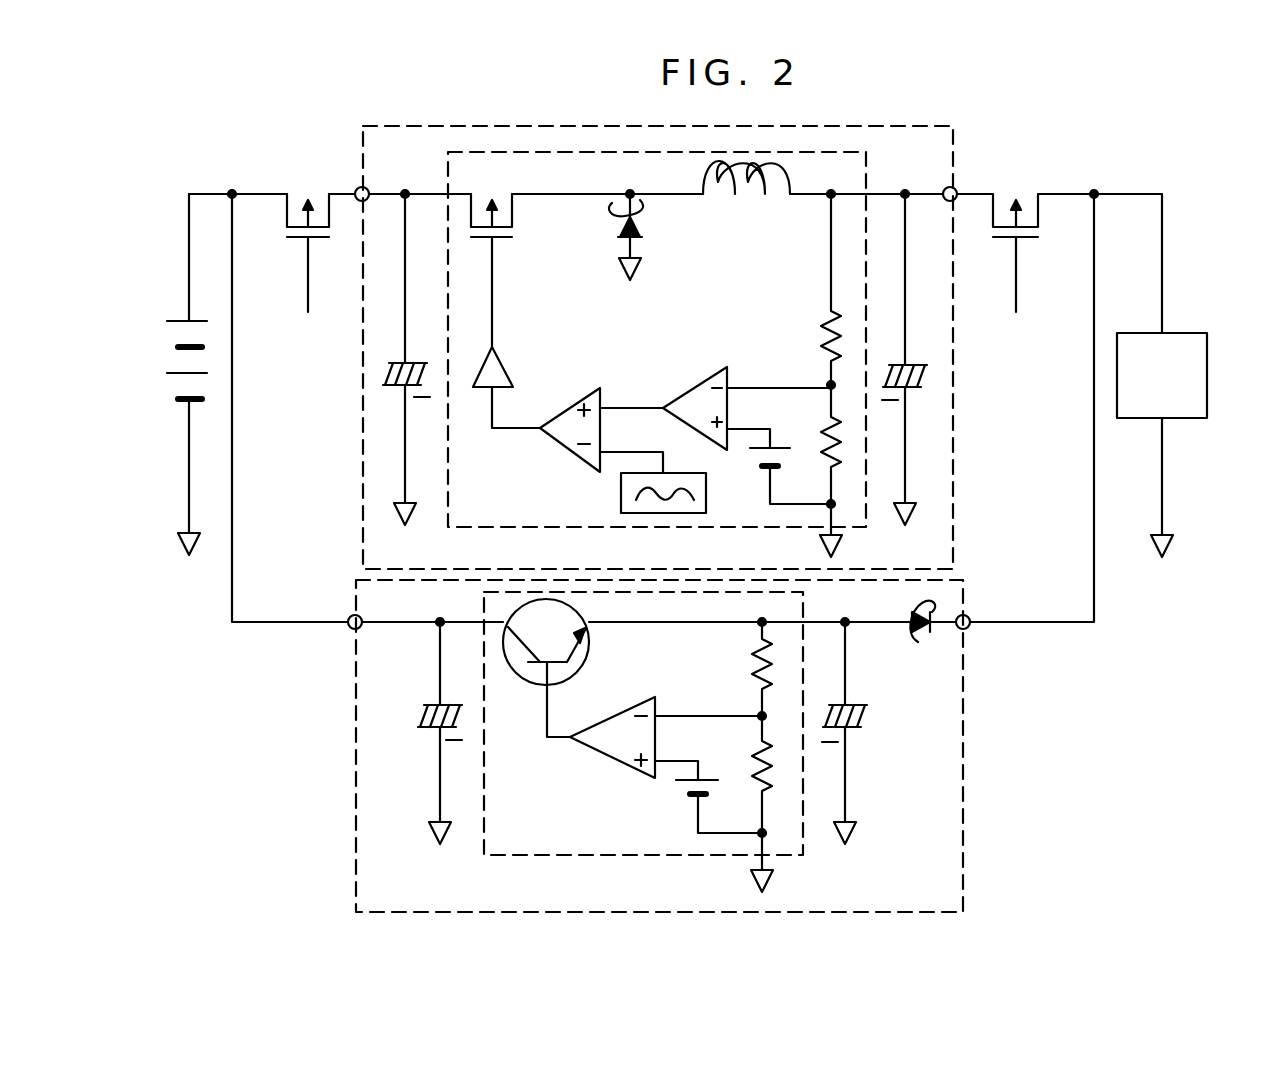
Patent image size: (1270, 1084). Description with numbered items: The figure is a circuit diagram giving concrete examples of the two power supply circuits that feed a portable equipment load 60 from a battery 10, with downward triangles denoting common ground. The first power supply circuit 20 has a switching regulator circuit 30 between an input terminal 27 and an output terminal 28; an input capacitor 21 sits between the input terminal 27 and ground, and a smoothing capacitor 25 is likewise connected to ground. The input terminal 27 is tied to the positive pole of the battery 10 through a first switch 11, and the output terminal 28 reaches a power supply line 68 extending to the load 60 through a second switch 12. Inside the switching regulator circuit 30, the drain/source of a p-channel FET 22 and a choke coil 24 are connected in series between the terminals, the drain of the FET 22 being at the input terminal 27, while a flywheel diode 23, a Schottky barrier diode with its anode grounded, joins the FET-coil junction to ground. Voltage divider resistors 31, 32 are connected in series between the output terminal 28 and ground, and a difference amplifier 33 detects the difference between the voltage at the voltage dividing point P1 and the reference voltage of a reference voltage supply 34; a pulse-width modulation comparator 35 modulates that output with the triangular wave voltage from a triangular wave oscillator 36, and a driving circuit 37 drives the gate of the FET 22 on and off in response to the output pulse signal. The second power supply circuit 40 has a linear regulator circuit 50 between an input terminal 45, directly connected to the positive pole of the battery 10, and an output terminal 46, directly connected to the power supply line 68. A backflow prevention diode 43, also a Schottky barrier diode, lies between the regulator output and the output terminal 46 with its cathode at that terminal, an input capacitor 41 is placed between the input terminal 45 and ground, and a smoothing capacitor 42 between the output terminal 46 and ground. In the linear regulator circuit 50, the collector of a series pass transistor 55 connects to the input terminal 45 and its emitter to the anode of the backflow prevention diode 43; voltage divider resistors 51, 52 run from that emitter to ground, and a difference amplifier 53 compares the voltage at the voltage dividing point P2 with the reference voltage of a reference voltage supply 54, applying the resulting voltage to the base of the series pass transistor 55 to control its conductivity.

The battery 10 is at (190, 401).
The first switch 11 is at (298, 240).
The second switch 12 is at (1030, 240).
The first power supply circuit 20 is at (362, 483).
The input capacitor 21 is at (400, 385).
The p-channel FET 22 is at (505, 240).
The flywheel diode 23 is at (642, 238).
The choke coil 24 is at (755, 198).
The smoothing capacitor 25 is at (918, 388).
The input terminal 27 is at (357, 190).
The output terminal 28 is at (955, 190).
The switching regulator circuit 30 is at (535, 527).
The voltage divider resistor 31 is at (822, 340).
The voltage divider resistor 32 is at (820, 432).
The difference amplifier 33 is at (698, 380).
The reference voltage supply 34 is at (778, 445).
The pulse-width modulation comparator 35 is at (570, 398).
The triangular wave oscillator 36 is at (621, 497).
The driving circuit 37 is at (488, 392).
The second power supply circuit 40 is at (350, 655).
The input capacitor 41 is at (430, 730).
The smoothing capacitor 42 is at (855, 728).
The backflow prevention diode 43 is at (916, 642).
The input terminal 45 is at (349, 616).
The output terminal 46 is at (968, 616).
The linear regulator circuit 50 is at (480, 846).
The voltage divider resistor 51 is at (752, 660).
The voltage divider resistor 52 is at (756, 770).
The difference amplifier 53 is at (585, 745).
The reference voltage supply 54 is at (690, 800).
The series pass transistor 55 is at (590, 640).
The load 60 is at (1208, 372).
The power supply line 68 is at (1165, 258).
The voltage dividing point P1 is at (847, 386).
The voltage dividing point P2 is at (781, 717).